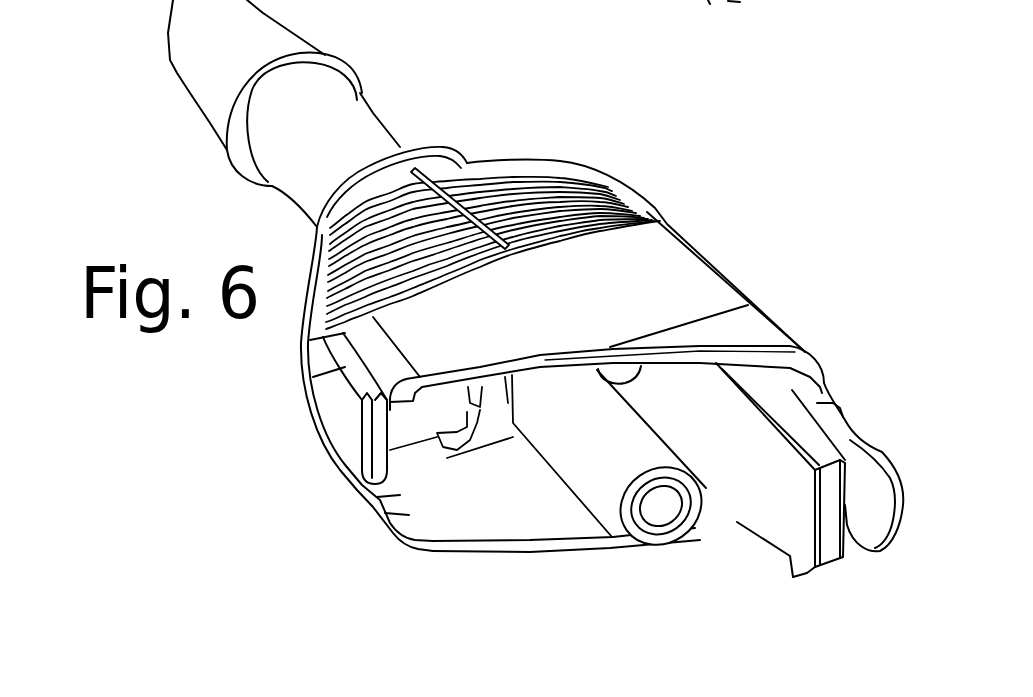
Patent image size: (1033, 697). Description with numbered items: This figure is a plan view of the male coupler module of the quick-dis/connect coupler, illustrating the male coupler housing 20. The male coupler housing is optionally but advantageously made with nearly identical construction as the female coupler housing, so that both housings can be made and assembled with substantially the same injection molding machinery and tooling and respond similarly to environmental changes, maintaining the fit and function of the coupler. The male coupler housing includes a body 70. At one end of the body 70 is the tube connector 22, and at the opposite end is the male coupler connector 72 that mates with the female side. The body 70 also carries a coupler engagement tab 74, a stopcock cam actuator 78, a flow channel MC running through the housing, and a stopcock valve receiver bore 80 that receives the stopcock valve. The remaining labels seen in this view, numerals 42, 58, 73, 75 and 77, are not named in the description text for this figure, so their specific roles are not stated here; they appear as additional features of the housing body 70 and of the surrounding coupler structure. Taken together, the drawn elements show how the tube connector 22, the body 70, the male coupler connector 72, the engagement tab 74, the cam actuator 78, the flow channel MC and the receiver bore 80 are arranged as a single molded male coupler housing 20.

The male coupler housing 20 is at (240, 480).
The tube connector 22 is at (337, 122).
The (cut-off numeral) 42 is at (516, 6).
The (cut-off numeral) 58 is at (838, 0).
The body 70 is at (648, 260).
The male coupler connector 72 is at (603, 483).
The lip 73 is at (533, 352).
The coupler engagement tab 74 is at (880, 510).
The bottom rim 75 is at (468, 548).
The ribs / slots 77 is at (563, 176).
The stopcock cam actuator 78 is at (360, 450).
The stopcock valve receiver bore 80 is at (343, 408).
The flow channel MC is at (667, 517).